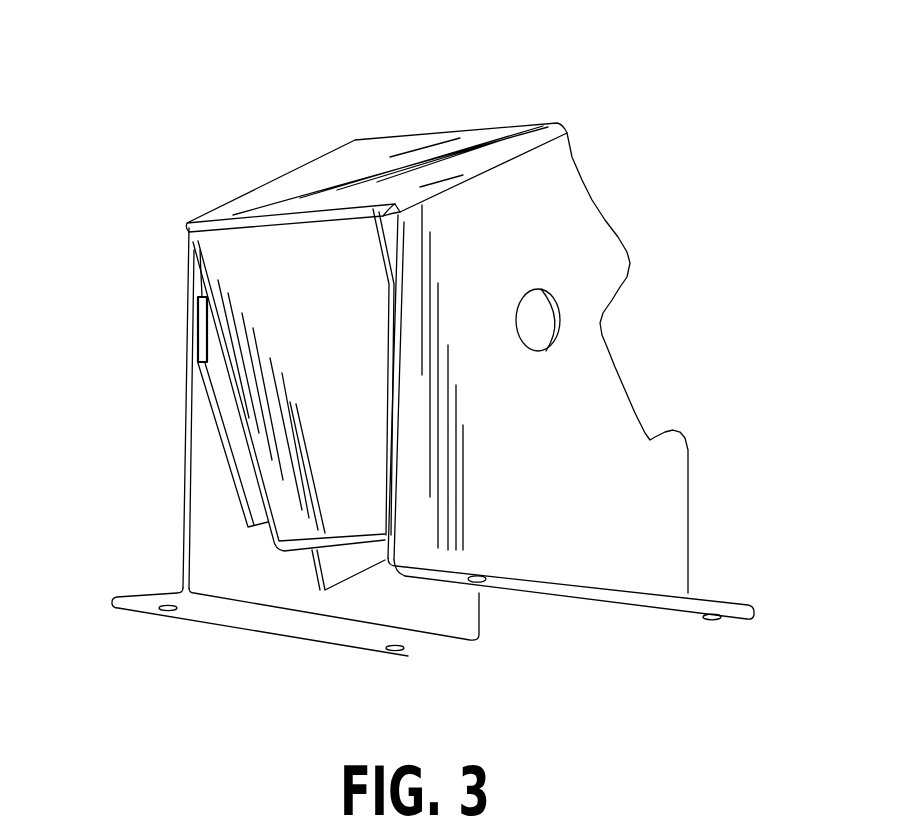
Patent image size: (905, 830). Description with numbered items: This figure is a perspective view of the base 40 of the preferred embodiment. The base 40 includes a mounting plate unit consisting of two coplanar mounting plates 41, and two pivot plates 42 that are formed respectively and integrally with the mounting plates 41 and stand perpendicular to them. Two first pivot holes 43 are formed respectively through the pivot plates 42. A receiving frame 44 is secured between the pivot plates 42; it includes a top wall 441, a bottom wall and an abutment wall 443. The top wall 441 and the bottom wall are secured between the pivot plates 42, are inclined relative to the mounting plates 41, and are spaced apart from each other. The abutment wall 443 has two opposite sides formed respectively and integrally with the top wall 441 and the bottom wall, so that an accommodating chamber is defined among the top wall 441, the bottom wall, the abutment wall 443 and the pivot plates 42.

The base 40 is at (417, 364).
The mounting plates 41 is at (150, 610).
The pivot plates 42 is at (202, 540).
The first pivot holes 43 is at (547, 326).
The receiving frame 44 is at (304, 295).
The top wall 441 is at (302, 182).
The abutment wall 443 is at (217, 257).